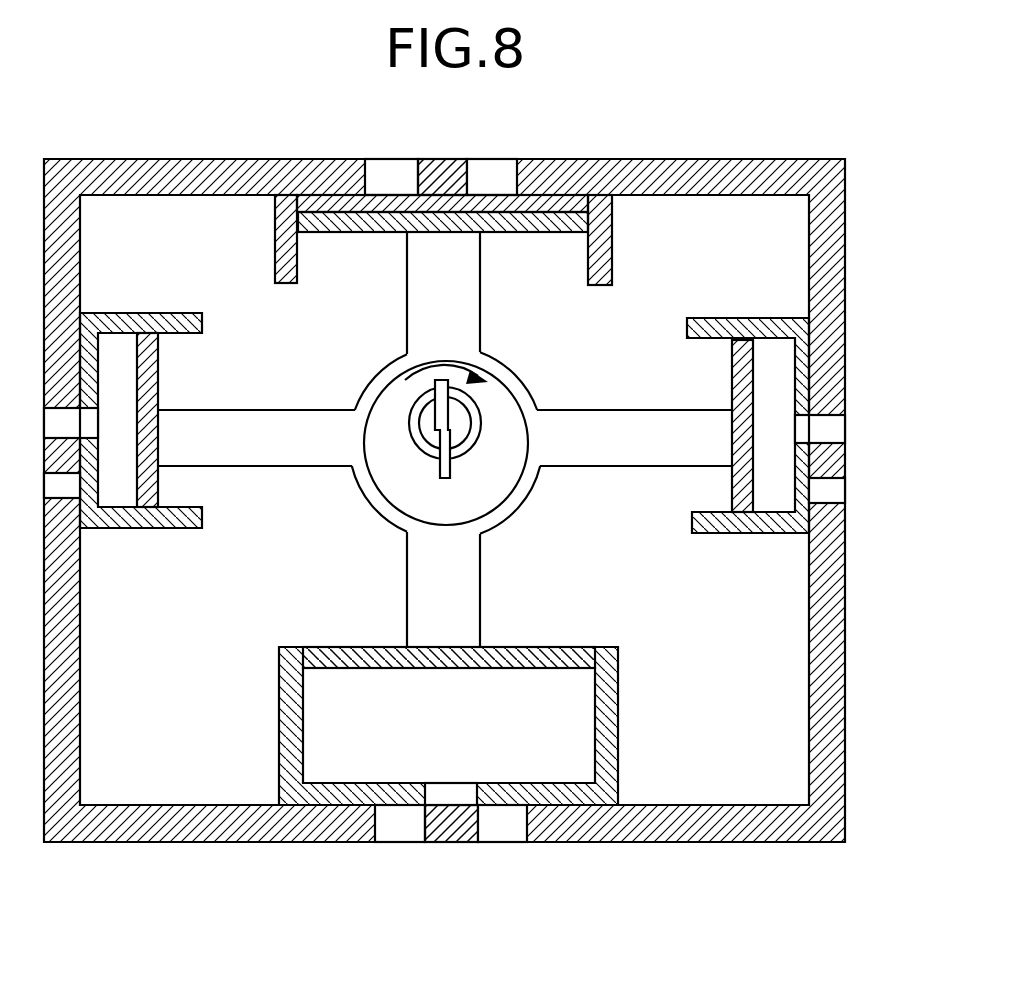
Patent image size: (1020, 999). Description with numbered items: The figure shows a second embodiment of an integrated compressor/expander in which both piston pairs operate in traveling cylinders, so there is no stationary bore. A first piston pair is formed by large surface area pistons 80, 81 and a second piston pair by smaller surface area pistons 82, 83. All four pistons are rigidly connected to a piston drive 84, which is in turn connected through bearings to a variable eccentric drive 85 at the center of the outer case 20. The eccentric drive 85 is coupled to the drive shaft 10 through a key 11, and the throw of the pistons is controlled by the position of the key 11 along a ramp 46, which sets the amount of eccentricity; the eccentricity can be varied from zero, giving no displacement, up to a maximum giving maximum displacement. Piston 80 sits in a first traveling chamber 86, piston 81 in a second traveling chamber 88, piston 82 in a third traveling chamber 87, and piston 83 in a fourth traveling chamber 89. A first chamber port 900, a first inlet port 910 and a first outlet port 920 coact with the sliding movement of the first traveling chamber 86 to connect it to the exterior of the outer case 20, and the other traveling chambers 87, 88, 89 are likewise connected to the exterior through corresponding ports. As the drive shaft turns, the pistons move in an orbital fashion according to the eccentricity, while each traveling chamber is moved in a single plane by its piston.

The outer case 20 is at (766, 160).
The drive shaft 10 is at (420, 408).
The key 11 is at (443, 470).
The ramp 46 is at (460, 430).
The variable eccentric drive 85 is at (508, 413).
The piston 80 is at (545, 235).
The first traveling chamber 86 is at (547, 212).
The piston 81 is at (570, 648).
The piston 82 is at (737, 365).
The piston 83 is at (150, 378).
The piston drive 84 is at (468, 590).
The third traveling chamber 87 is at (773, 412).
The second traveling chamber 88 is at (590, 760).
The fourth traveling chamber 89 is at (115, 500).
The first chamber port 900 is at (442, 205).
The first inlet port 910 is at (498, 172).
The first outlet port 920 is at (392, 170).